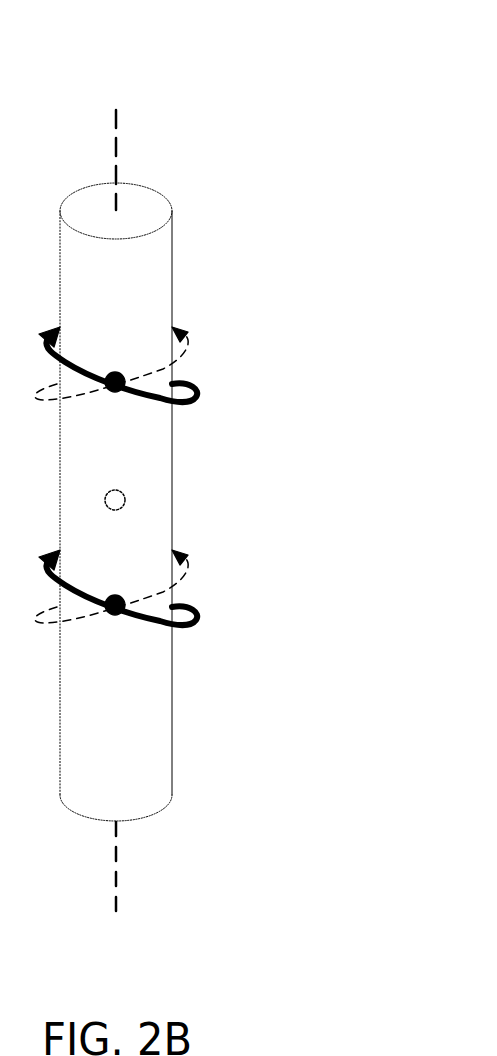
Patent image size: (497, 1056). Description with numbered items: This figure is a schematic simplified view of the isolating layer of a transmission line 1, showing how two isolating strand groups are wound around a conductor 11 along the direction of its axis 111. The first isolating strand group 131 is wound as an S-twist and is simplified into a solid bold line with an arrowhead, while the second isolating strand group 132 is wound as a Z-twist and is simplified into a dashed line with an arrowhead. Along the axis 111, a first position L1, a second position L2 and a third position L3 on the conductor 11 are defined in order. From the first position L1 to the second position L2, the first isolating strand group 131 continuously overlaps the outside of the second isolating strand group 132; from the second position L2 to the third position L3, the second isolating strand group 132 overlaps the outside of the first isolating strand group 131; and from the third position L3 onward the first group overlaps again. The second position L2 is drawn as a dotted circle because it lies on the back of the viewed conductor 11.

The transmission line 1 is at (366, 97).
The conductor 11 is at (172, 241).
The axis 111 is at (115, 162).
The first isolating strand group 131 is at (198, 618).
The second isolating strand group 132 is at (190, 576).
The first position L1 is at (118, 615).
The second position L2 is at (125, 500).
The third position L3 is at (118, 392).